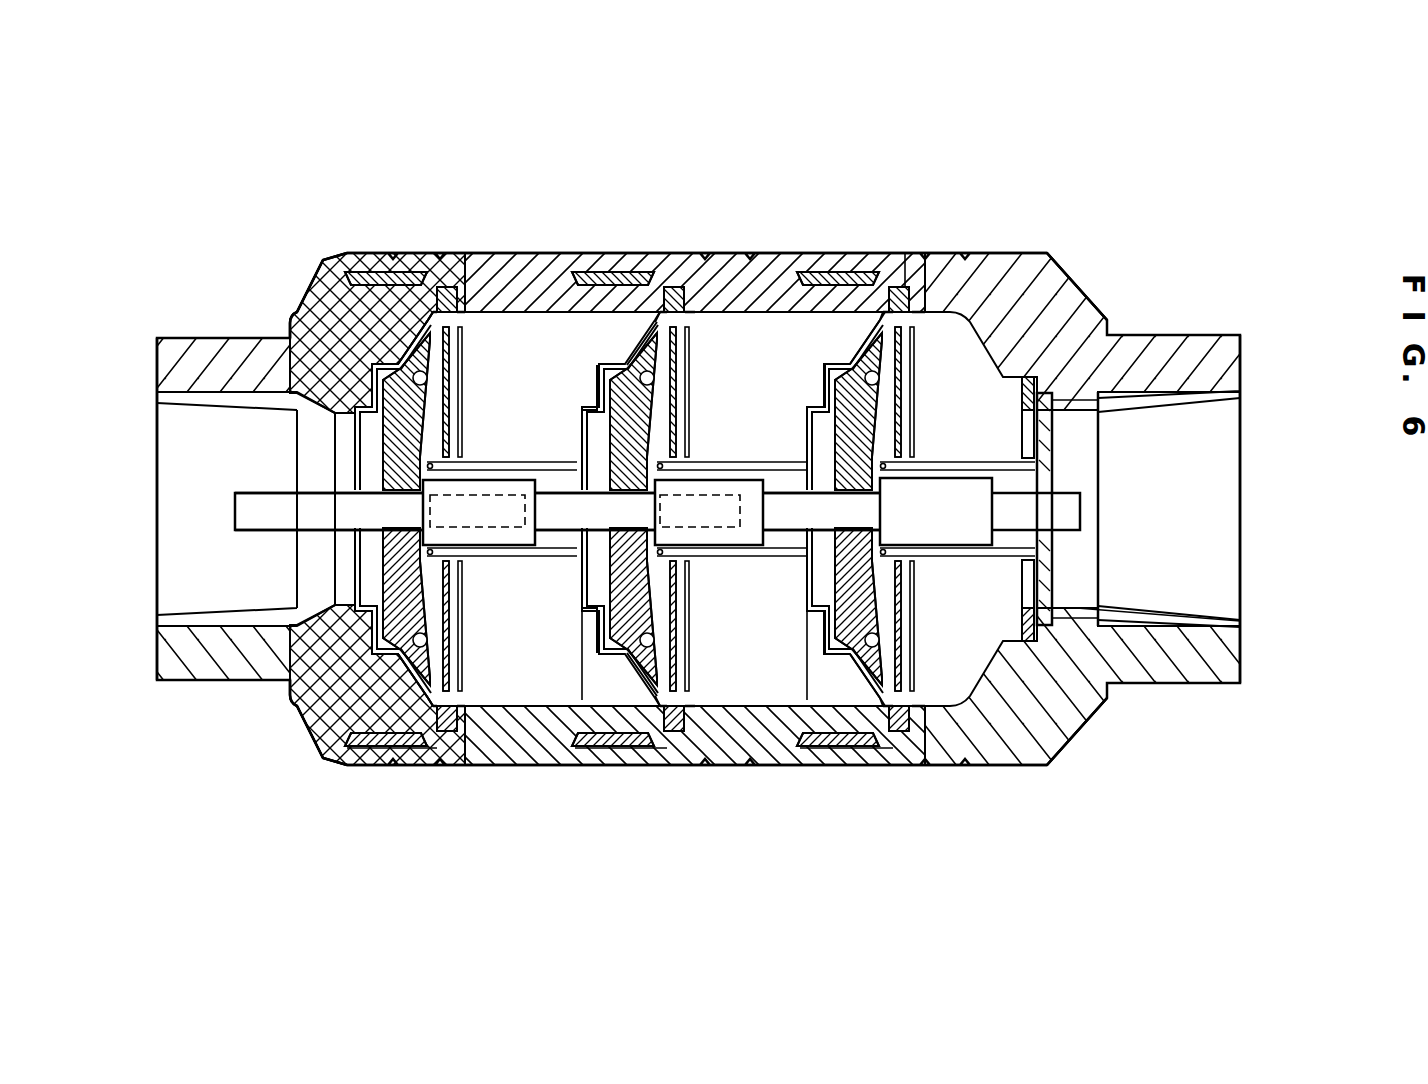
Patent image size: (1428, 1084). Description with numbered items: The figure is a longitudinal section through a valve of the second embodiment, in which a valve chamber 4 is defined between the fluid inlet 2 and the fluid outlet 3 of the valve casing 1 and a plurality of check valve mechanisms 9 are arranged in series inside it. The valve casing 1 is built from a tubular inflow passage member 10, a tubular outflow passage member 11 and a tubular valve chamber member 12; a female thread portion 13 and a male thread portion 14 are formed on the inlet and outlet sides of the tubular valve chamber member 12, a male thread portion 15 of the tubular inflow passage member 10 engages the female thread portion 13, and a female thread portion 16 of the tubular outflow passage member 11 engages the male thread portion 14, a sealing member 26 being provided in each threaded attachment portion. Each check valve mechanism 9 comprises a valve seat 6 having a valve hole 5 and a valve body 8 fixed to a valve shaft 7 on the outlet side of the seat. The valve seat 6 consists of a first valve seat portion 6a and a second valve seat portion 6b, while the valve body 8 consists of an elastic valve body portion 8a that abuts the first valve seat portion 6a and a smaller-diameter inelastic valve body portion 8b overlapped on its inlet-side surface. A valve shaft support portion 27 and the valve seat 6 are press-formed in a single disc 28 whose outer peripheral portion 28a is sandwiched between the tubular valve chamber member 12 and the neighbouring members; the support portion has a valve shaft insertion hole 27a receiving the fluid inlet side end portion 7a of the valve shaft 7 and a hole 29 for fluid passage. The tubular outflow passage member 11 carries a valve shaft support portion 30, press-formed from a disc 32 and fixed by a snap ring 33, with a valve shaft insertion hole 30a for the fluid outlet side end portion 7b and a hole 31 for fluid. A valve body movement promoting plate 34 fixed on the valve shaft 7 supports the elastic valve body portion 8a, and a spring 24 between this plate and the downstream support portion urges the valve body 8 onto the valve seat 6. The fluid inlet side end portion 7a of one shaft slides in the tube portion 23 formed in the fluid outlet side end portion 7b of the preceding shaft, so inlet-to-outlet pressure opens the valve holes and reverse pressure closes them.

The valve casing 1 is at (551, 236).
The fluid inlet 2 is at (196, 549).
The fluid outlet 3 is at (1256, 536).
The valve chamber 4 is at (518, 318).
The valve hole 5 is at (355, 445).
The valve seat 6 is at (330, 305).
The first valve seat portion 6a is at (405, 290).
The second valve seat portion 6b is at (300, 320).
The valve shaft 7 is at (335, 524).
The fluid inlet side end portion 7a is at (272, 515).
The fluid outlet side end portion 7b is at (470, 532).
The valve body 8 is at (372, 380).
The elastic valve body portion 8a is at (400, 345).
The inelastic valve body portion 8b is at (352, 445).
The check valve mechanism 9 is at (370, 650).
The tubular inflow passage member 10 is at (330, 300).
The tubular outflow passage member 11 is at (1085, 300).
The tubular valve chamber member 12 is at (500, 254).
The female thread portion 13 is at (400, 750).
The male thread portion 14 is at (612, 757).
The male thread portion 15 is at (370, 764).
The female thread portion 16 is at (880, 750).
The tube portion 23 is at (500, 547).
The spring 24 is at (480, 462).
The sealing member 26 is at (903, 297).
The valve shaft support portion 27 is at (592, 440).
The valve shaft insertion hole 27a is at (585, 470).
The disc 28 is at (580, 400).
The outer peripheral portion 28a is at (405, 274).
The hole 29 is at (600, 587).
The valve shaft support portion 30 is at (1052, 440).
The valve shaft insertion hole 30a is at (1056, 470).
The hole 31 is at (1066, 584).
The disc 32 is at (1035, 400).
The snap ring 33 is at (1095, 325).
The valve body movement promoting plate 34 is at (1000, 275).